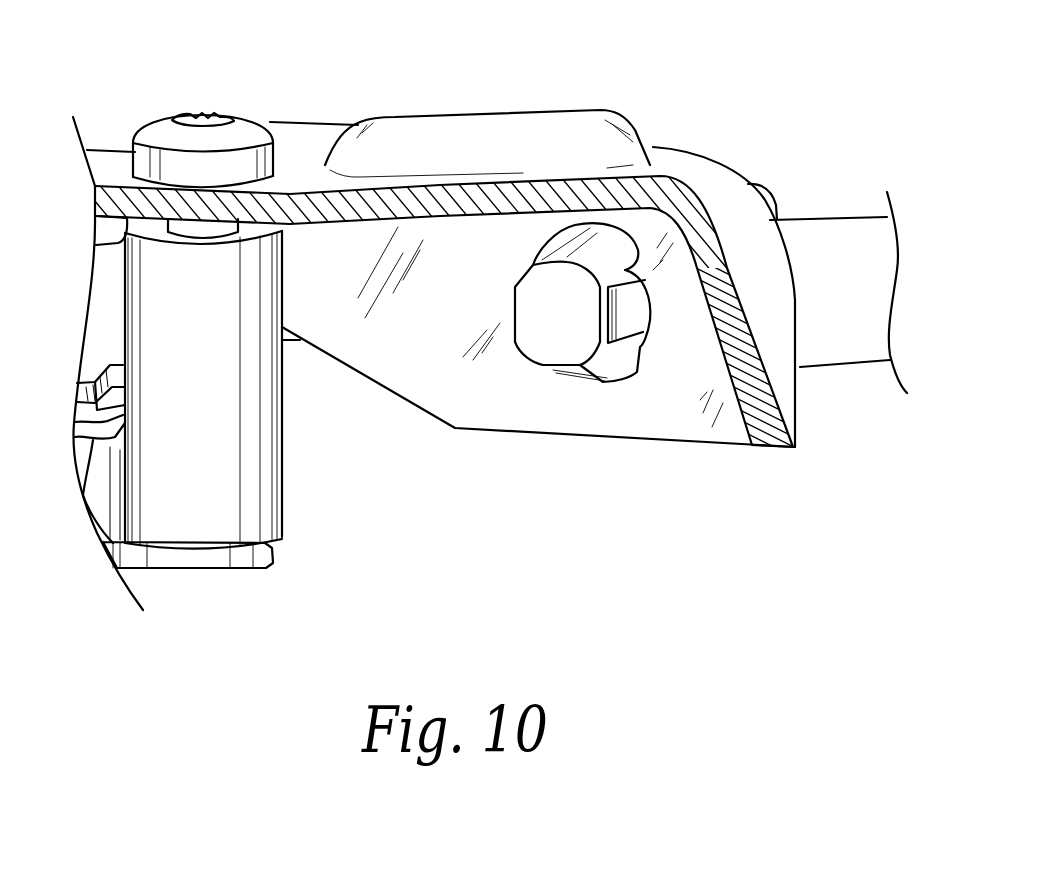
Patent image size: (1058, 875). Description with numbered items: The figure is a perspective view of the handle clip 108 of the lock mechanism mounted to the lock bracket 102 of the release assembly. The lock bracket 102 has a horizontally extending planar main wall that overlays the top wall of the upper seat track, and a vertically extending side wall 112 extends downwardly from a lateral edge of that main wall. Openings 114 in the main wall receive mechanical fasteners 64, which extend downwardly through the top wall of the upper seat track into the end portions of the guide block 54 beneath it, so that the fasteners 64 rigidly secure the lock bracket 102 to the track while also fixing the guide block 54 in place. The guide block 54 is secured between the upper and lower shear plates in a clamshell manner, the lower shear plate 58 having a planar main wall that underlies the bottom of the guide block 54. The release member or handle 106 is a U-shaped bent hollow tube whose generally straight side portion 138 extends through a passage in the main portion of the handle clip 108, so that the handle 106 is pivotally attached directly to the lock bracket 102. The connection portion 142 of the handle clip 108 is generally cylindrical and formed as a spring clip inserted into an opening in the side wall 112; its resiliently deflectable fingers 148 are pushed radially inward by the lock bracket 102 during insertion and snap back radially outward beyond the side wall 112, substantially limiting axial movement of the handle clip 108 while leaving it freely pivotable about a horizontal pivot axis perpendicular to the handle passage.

The guide block 54 is at (283, 514).
The lower shear plate 58 is at (220, 573).
The mechanical fastener 64 is at (145, 125).
The lock bracket 102 is at (441, 114).
The release member or handle 106 is at (800, 221).
The handle clip 108 is at (543, 369).
The side wall 112 is at (386, 391).
The openings 114 is at (283, 121).
The side portion 138 is at (803, 367).
The connection portion 142 is at (632, 303).
The fingers 148 is at (607, 233).